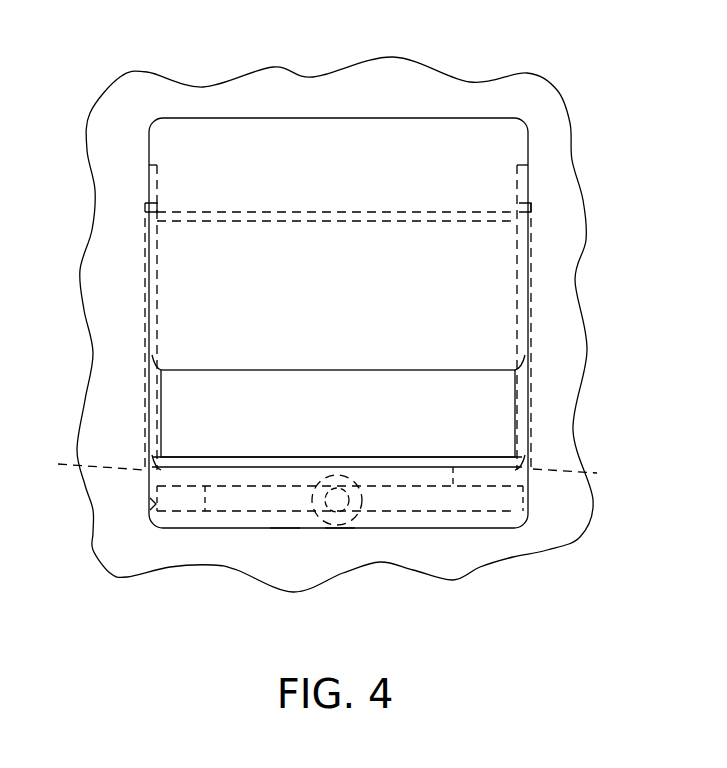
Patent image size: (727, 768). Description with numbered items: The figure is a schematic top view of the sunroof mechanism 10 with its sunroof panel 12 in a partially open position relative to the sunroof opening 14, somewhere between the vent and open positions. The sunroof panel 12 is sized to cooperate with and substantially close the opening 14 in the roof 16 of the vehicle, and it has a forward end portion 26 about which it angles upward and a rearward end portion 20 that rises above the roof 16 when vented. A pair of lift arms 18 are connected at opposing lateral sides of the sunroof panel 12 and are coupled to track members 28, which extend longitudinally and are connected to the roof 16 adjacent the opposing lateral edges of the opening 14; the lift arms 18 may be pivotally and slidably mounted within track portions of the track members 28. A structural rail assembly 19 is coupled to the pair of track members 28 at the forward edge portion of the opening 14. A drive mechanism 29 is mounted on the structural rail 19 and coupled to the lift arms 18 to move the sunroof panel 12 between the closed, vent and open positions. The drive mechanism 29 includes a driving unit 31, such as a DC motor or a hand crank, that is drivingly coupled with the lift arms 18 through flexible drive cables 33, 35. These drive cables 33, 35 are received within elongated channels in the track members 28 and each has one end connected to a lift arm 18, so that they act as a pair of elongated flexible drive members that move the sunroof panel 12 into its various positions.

The sunroof mechanism 10 is at (540, 224).
The sunroof panel 12 is at (391, 150).
The sunroof opening 14 is at (212, 457).
The roof 16 is at (543, 103).
The lift arms 18 is at (153, 373).
The structural rail assembly 19 is at (285, 532).
The rearward end portion 20 is at (298, 118).
The forward end portion 26 is at (307, 371).
The track members 28 is at (326, 470).
The drive mechanism 29 is at (341, 537).
The driving unit 31 is at (332, 528).
The drive cable 33 is at (138, 522).
The drive cable 35 is at (453, 468).